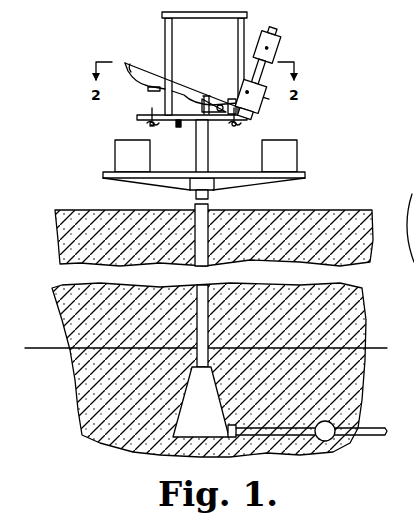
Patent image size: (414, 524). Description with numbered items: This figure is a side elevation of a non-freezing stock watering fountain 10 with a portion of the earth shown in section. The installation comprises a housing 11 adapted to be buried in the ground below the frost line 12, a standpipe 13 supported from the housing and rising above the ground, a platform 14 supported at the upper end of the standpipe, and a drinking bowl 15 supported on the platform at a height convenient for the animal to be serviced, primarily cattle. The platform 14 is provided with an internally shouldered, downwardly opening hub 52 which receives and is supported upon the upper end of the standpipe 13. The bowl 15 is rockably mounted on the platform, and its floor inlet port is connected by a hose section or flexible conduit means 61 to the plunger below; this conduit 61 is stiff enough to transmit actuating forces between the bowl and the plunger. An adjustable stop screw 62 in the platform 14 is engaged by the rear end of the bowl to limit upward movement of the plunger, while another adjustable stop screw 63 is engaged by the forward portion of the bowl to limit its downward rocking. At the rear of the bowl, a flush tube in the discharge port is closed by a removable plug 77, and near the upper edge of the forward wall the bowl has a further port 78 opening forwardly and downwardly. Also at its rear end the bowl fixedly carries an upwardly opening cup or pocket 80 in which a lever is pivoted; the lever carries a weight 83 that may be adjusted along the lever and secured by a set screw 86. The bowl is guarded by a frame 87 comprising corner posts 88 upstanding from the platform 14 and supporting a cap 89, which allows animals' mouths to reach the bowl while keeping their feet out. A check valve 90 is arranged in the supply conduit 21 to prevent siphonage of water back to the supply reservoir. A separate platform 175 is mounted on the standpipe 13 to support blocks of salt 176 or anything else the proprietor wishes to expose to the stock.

The non-freezing stock watering fountain 10 is at (80, 66).
The housing 11 is at (209, 413).
The frost line 12 is at (50, 340).
The standpipe 13 is at (197, 222).
The platform 14 is at (178, 127).
The drinking bowl 15 is at (206, 80).
The supply conduit 21 is at (272, 437).
The hub 52 is at (212, 132).
The flexible conduit means 61 is at (202, 108).
The adjustable stop screw 62 is at (240, 126).
The adjustable stop screw 63 is at (146, 127).
The removable plug 77 is at (263, 114).
The port 78 is at (411, 195).
The cup or pocket 80 is at (262, 98).
The weight 83 is at (274, 32).
The set screw 86 is at (278, 48).
The frame 87 is at (163, 52).
The corner posts 88 is at (237, 35).
The cap 89 is at (247, 14).
The check valve 90 is at (334, 424).
The separate platform 175 is at (300, 176).
The blocks of salt 176 is at (115, 152).